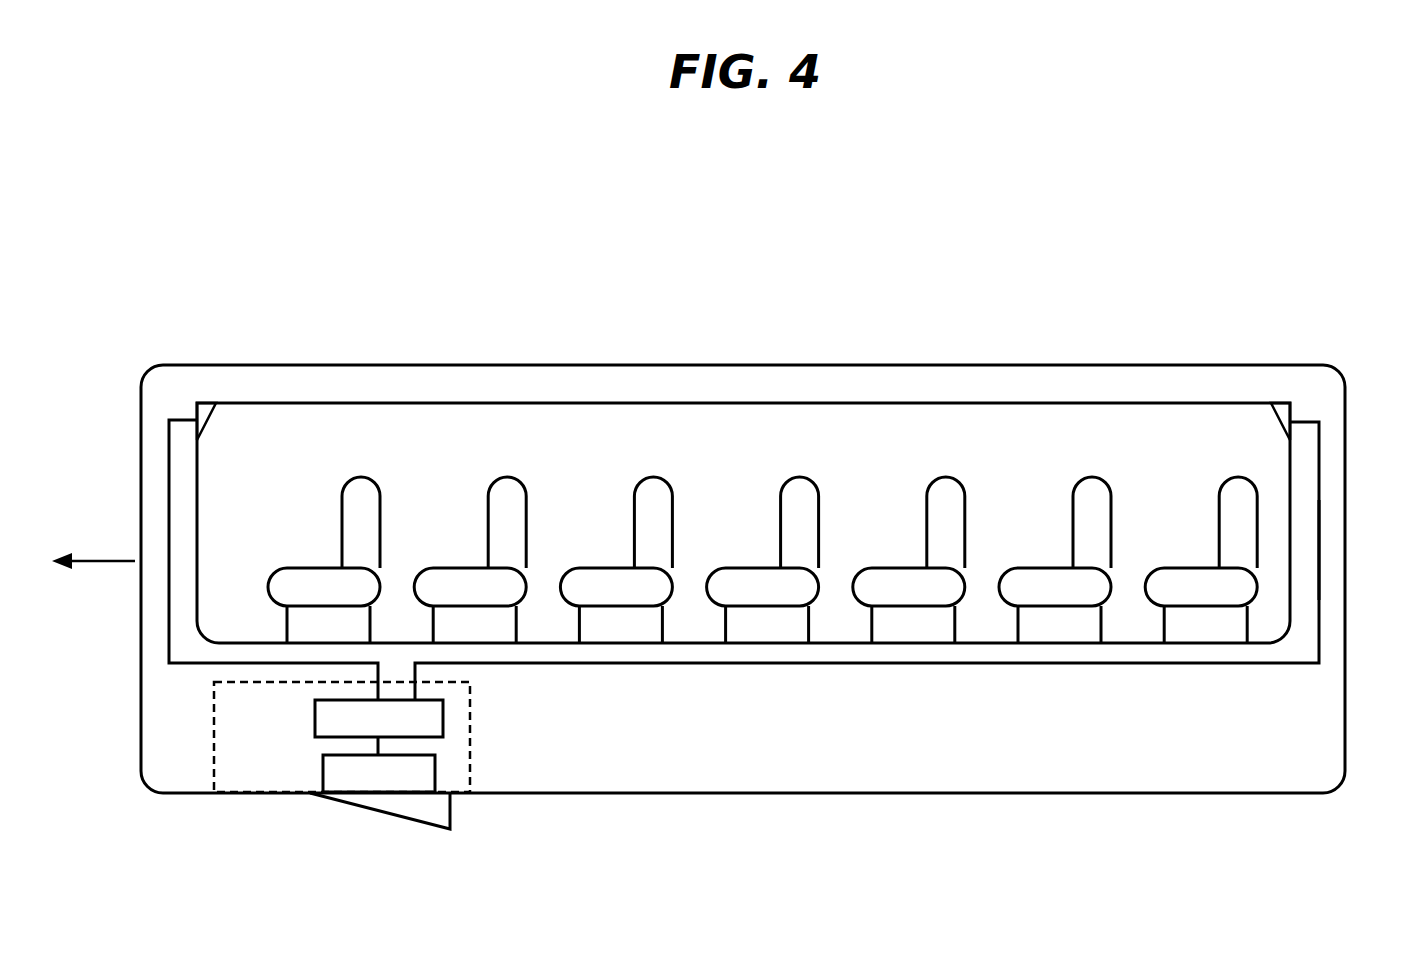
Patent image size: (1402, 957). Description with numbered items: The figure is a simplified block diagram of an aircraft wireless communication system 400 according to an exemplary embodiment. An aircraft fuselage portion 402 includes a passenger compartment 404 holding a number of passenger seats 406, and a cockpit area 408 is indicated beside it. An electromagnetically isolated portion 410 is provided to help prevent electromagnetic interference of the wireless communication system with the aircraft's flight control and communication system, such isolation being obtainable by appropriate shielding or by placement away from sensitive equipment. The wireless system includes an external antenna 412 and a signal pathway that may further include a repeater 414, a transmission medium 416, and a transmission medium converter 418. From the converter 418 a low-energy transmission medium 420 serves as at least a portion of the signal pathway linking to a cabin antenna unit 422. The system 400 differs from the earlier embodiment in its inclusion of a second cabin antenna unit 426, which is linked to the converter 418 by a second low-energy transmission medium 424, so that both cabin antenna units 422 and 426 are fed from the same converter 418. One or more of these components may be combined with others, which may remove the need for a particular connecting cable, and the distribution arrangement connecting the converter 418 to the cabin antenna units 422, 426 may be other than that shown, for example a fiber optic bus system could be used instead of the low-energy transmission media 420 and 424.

The aircraft wireless communication system 400 is at (1298, 228).
The aircraft fuselage portion 402 is at (753, 365).
The passenger compartment 404 is at (950, 403).
The passenger seats 406 is at (305, 601).
The cockpit area 408 is at (93, 554).
The electromagnetically isolated portion 410 is at (251, 769).
The external antenna 412 is at (372, 812).
The repeater 414 is at (435, 773).
The transmission medium 416 is at (378, 748).
The transmission medium converter 418 is at (443, 718).
The low-energy transmission medium 420 is at (169, 622).
The cabin antenna unit 422 is at (200, 440).
The second low-energy transmission medium 424 is at (1319, 540).
The second cabin antenna unit 426 is at (1290, 410).